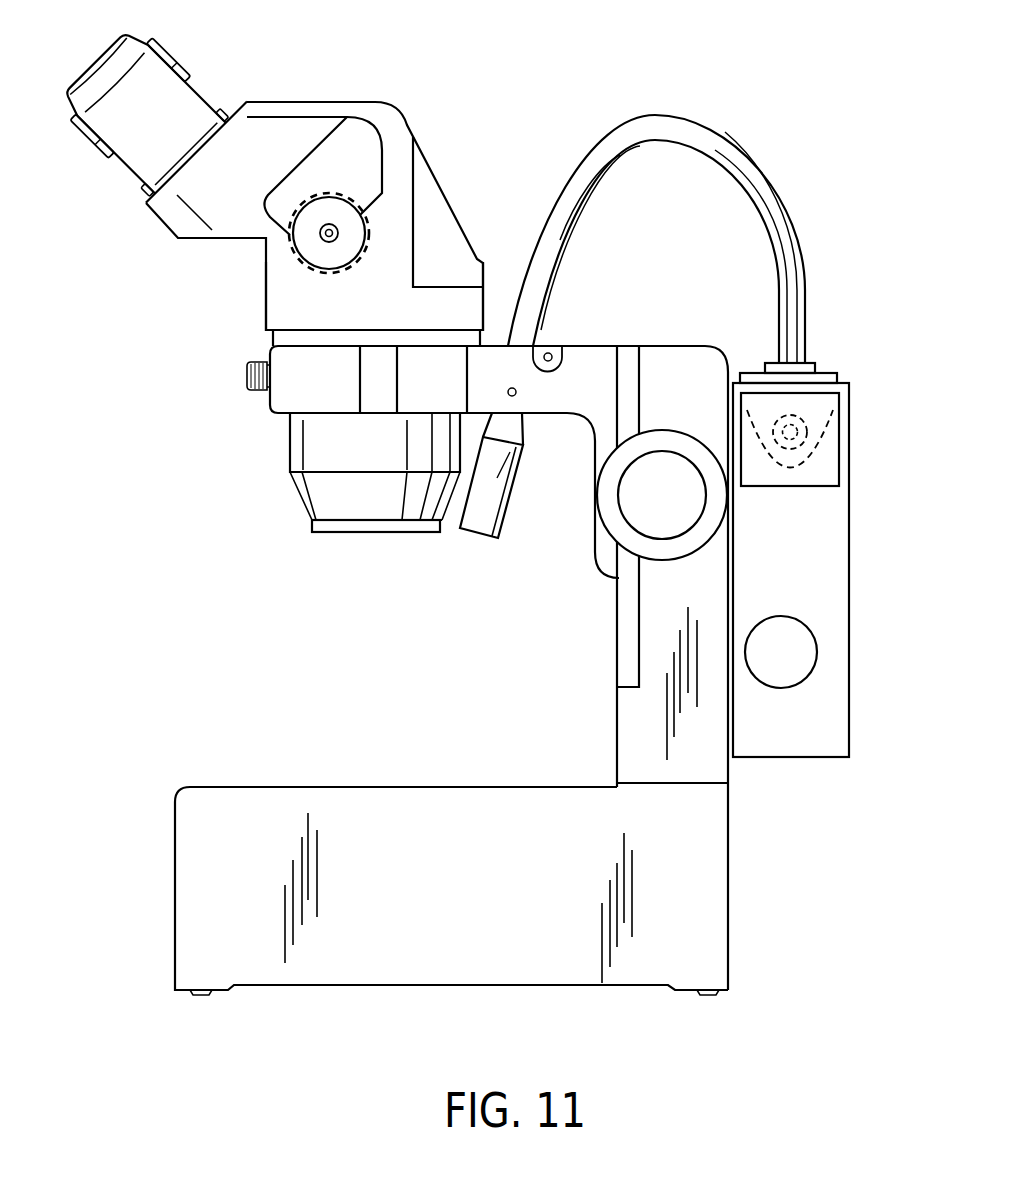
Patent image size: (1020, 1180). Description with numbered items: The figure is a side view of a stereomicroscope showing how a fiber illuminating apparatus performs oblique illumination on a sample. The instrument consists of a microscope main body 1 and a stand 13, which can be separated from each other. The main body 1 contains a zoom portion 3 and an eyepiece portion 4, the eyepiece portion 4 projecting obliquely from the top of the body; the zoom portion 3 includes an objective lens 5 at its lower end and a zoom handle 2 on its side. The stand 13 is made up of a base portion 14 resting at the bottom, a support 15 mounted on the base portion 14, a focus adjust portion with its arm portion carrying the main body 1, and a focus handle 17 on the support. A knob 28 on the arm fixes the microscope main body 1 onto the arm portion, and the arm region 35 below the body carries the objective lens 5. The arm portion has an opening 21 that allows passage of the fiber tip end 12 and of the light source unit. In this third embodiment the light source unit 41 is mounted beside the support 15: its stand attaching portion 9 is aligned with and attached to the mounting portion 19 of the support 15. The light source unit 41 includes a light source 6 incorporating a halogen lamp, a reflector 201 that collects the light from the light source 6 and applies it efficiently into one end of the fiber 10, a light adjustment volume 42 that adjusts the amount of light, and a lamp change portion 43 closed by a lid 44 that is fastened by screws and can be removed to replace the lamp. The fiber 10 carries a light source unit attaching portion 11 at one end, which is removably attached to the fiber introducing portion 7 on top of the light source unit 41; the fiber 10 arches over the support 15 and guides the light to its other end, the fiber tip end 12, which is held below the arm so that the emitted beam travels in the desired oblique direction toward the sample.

The microscope main body 1 is at (392, 119).
The zoom handle 2 is at (303, 240).
The zoom portion 3 is at (273, 302).
The eyepiece portion 4 is at (193, 113).
The objective lens 5 is at (307, 495).
The light source 6 is at (837, 422).
The fiber introducing portion 7 is at (837, 377).
The stand attaching portion 9 is at (728, 742).
The fiber 10 is at (763, 190).
The light source unit attaching portion 11 is at (803, 367).
The fiber tip end 12 is at (478, 527).
The stand 13 is at (785, 832).
The base portion 14 is at (233, 789).
The support 15 is at (702, 363).
The focus handle 17 is at (627, 507).
The mounting portion 19 is at (727, 720).
The opening 21 is at (592, 345).
The knob 28 is at (246, 377).
The lens holder 35 is at (275, 402).
The light source unit 41 is at (830, 622).
The light adjustment volume 42 is at (803, 670).
The lamp change portion 43 is at (827, 493).
The lid 44 is at (770, 480).
The reflector 201 is at (835, 448).